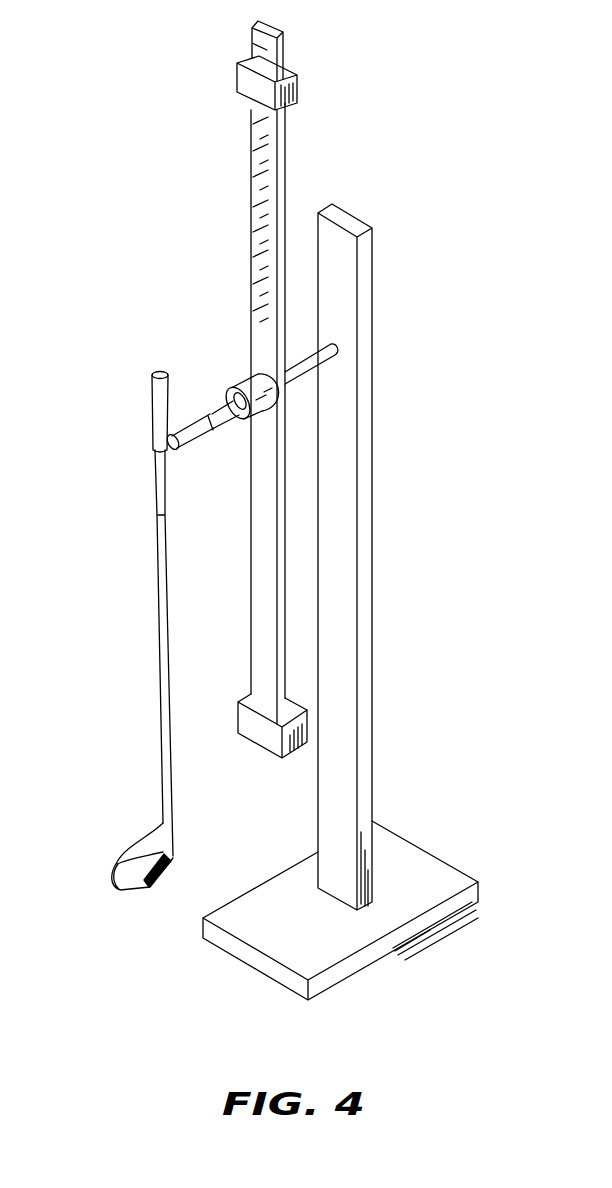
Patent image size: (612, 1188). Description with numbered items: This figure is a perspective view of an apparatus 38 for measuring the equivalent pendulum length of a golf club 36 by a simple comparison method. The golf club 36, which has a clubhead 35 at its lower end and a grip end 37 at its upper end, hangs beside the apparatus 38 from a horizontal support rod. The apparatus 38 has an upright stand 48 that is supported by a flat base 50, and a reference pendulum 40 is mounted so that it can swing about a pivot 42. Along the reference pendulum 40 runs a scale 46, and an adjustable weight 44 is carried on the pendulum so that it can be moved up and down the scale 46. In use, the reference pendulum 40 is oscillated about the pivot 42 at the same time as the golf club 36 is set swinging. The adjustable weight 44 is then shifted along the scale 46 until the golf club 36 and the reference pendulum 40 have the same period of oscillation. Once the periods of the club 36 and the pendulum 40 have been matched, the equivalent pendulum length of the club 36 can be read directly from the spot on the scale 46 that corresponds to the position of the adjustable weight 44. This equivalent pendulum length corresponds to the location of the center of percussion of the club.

The clubhead 35 is at (126, 862).
The golf club 36 is at (159, 618).
The grip end 37 is at (157, 418).
The apparatus 38 is at (416, 413).
The reference pendulum 40 is at (262, 562).
The pivot 42 is at (306, 358).
The adjustable weight 44 is at (244, 79).
The scale 46 is at (260, 215).
The stand 48 is at (368, 502).
The base 50 is at (424, 860).